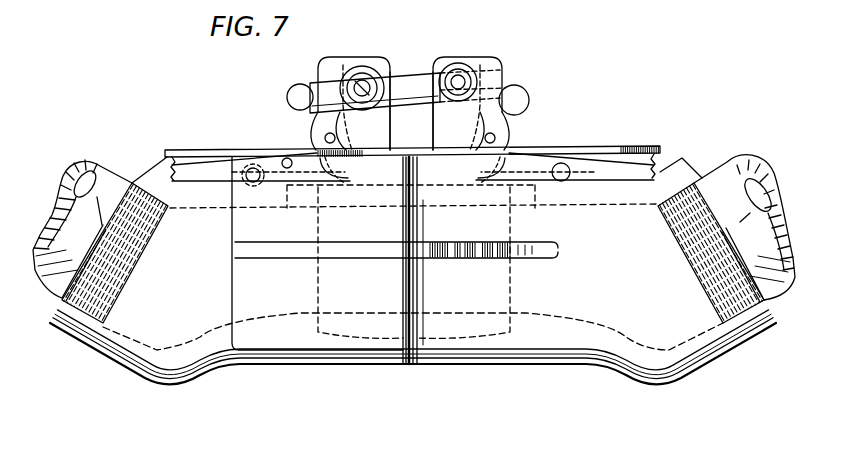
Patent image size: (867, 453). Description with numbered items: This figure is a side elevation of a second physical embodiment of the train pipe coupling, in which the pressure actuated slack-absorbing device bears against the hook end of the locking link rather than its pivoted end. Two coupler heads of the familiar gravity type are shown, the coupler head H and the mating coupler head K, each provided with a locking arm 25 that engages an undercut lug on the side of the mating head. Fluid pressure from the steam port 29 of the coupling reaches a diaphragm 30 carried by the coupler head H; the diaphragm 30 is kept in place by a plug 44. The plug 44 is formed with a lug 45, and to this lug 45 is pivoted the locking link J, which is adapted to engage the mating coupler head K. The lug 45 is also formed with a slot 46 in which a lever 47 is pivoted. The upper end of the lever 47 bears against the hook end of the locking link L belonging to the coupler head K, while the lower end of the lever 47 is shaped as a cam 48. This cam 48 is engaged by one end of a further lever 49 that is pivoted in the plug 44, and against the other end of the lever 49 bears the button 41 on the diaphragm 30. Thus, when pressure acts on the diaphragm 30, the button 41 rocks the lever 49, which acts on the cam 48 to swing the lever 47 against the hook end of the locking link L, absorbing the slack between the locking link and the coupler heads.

The coupler head H is at (147, 175).
The mating coupler head K is at (662, 172).
The locking link J is at (391, 74).
The locking link L is at (411, 84).
The locking arm 25 is at (308, 345).
The steam port 29 is at (205, 318).
The diaphragm 30 is at (230, 147).
The button 41 is at (250, 183).
The plug 44 is at (190, 148).
The lug 45 is at (348, 62).
The slot 46 is at (322, 75).
The lever 47 is at (292, 110).
The cam 48 is at (338, 180).
The lever 49 is at (267, 156).